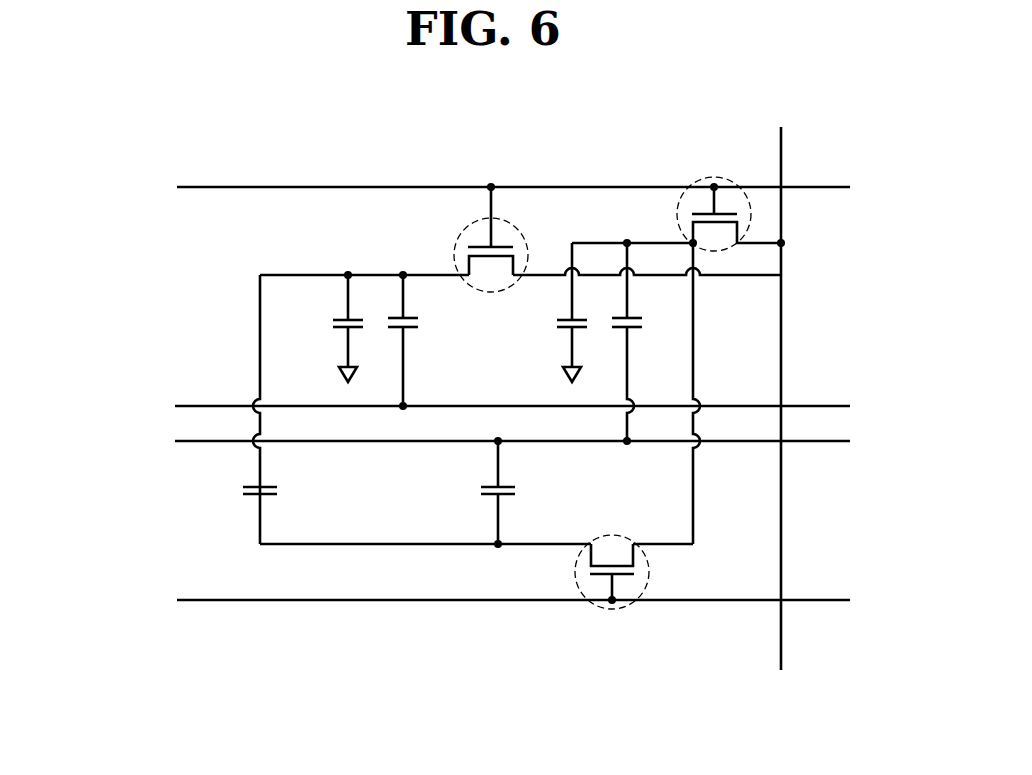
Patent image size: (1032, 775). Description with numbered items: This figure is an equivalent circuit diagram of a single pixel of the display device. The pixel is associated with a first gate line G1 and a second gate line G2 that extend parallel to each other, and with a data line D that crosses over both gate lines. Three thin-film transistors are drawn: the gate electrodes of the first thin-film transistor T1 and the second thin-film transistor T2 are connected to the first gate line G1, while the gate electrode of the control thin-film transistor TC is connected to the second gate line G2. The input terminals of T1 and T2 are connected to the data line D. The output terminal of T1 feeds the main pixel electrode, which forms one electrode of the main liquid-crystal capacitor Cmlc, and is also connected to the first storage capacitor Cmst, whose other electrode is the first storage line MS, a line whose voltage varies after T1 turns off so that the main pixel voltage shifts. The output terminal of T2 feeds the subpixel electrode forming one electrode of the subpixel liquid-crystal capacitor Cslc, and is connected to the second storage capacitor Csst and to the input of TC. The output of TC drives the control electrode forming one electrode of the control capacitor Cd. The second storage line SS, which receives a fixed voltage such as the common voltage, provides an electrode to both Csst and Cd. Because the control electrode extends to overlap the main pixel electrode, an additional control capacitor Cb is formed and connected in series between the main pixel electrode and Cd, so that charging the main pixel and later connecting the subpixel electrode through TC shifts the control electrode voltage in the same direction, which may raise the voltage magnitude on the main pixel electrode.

The first gate line G1 is at (496, 189).
The second gate line G2 is at (496, 601).
The first storage line MS is at (197, 405).
The second storage line SS is at (198, 445).
The data line D is at (781, 385).
The first thin-film transistor T1 is at (472, 226).
The second thin-film transistor T2 is at (714, 182).
The control thin-film transistor TC is at (613, 607).
The main liquid-crystal capacitor Cmlc is at (326, 328).
The first storage capacitor Cmst is at (427, 342).
The subpixel liquid-crystal capacitor Cslc is at (551, 312).
The second storage capacitor Csst is at (647, 342).
The additional control capacitor Cb is at (274, 493).
The control capacitor Cd is at (513, 492).